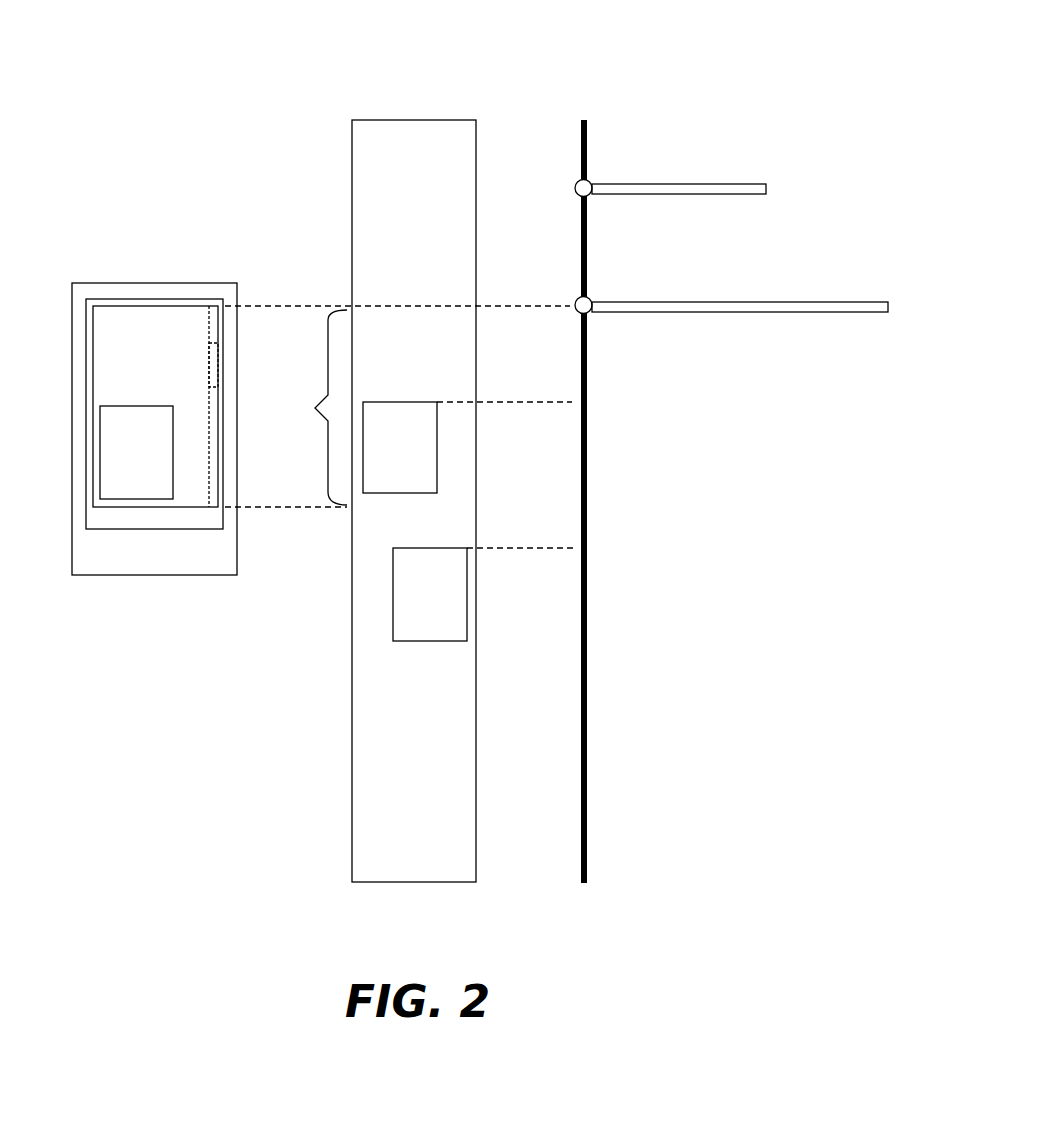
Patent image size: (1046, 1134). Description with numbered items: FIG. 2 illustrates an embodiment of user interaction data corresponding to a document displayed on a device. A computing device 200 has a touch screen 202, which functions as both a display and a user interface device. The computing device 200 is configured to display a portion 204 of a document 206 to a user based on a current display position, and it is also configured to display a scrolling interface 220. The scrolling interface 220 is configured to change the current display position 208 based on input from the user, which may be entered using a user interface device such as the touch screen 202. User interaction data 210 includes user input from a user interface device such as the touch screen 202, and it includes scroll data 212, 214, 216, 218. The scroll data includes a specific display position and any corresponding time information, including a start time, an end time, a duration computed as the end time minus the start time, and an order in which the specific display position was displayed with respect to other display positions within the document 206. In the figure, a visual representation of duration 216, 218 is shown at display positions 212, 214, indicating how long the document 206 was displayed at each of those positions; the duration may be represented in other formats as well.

The computing device 200 is at (200, 283).
The touch screen 202 is at (181, 297).
The portion of document 204 is at (120, 305).
The document 206 is at (412, 118).
The current display position 208 is at (313, 408).
The user interaction data 210 is at (606, 107).
The scroll data display position 212 is at (592, 302).
The scroll data display position 214 is at (592, 184).
The visual representation of duration 216 is at (777, 302).
The visual representation of duration 218 is at (767, 188).
The scrolling interface 220 is at (215, 508).